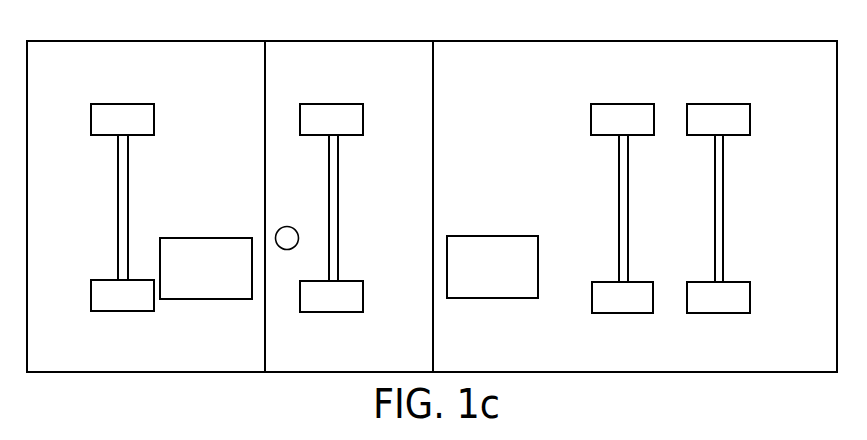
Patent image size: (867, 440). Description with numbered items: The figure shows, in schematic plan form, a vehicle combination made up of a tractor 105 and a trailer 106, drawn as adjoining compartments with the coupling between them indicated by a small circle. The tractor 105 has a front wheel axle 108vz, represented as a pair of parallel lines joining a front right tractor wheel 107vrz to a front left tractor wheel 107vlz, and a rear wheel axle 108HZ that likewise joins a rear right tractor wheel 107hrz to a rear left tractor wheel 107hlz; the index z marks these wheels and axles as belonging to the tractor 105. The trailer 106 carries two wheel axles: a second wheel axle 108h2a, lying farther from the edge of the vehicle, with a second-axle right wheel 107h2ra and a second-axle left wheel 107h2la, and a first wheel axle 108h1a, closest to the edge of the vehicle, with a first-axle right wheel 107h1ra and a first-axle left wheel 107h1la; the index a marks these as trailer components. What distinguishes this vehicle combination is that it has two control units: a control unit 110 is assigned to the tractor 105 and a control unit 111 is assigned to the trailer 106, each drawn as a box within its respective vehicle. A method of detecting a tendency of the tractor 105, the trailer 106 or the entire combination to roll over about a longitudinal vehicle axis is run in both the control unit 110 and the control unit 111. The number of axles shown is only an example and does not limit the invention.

The tractor 105 is at (197, 71).
The trailer 106 is at (471, 72).
The front right tractor wheel 107vrz is at (122, 104).
The front left tractor wheel 107vlz is at (122, 311).
The tractor front wheel axle 108vz is at (118, 191).
The tractor control unit 110 is at (203, 299).
The rear right tractor wheel 107hrz is at (342, 104).
The rear left tractor wheel 107hlz is at (342, 312).
The tractor rear wheel axle 108HZ is at (338, 152).
The trailer control unit 111 is at (488, 298).
The trailer second axle right wheel 107h2ra is at (616, 104).
The trailer second axle left wheel 107h2la is at (616, 313).
The trailer second wheel axle 108h2a is at (620, 178).
The trailer first axle right wheel 107h1ra is at (727, 104).
The trailer first axle left wheel 107h1la is at (727, 313).
The trailer first wheel axle 108h1a is at (723, 163).